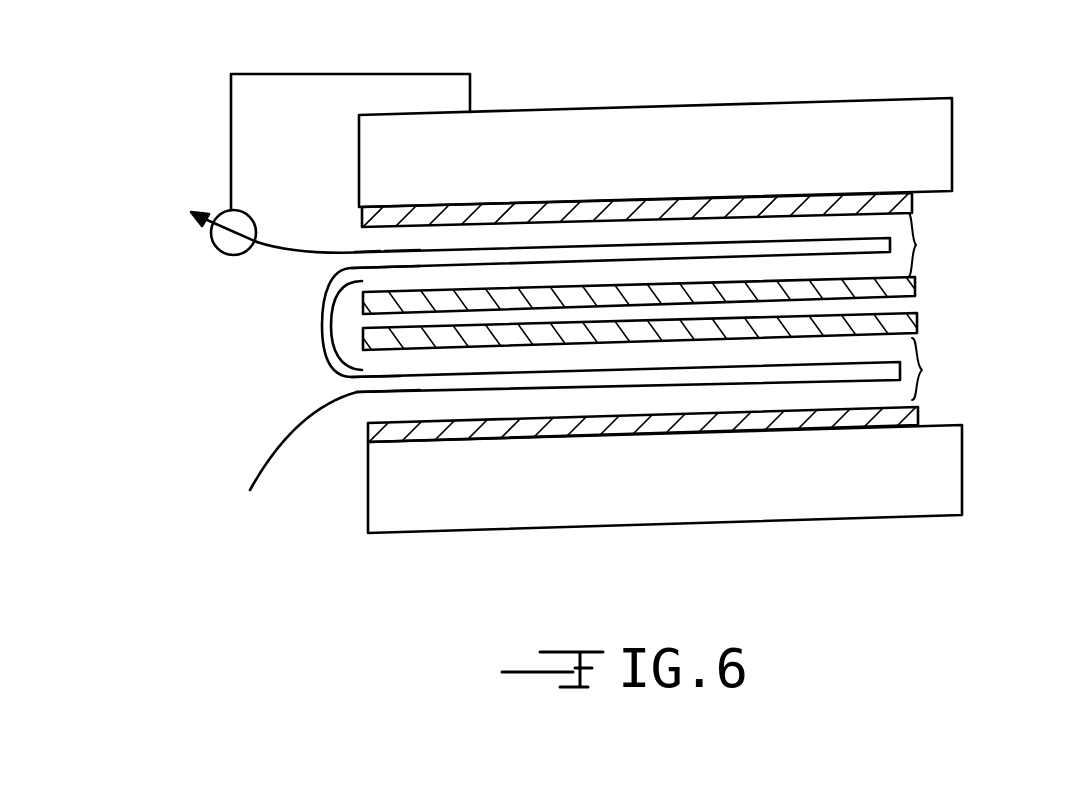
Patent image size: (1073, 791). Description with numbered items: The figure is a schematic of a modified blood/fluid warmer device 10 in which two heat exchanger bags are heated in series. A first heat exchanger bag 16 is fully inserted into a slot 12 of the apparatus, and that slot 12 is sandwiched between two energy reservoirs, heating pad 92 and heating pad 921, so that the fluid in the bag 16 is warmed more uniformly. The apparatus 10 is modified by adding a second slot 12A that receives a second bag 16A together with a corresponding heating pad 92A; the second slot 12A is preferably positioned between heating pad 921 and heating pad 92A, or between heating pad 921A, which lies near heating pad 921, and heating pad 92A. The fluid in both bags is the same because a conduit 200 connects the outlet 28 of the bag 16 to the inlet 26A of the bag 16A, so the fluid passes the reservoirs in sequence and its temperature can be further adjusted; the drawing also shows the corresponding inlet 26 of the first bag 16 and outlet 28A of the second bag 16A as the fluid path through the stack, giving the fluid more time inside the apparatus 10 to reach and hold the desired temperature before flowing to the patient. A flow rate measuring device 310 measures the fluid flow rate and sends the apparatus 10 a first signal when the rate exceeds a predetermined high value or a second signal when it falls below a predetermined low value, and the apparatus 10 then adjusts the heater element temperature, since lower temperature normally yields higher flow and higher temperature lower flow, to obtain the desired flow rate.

The warmer device 10 is at (658, 98).
The flow rate measuring device 310 is at (221, 212).
The upper membrane layer 28A is at (363, 253).
The second bag 16A is at (392, 250).
The inlet of bag 16a 26A is at (333, 274).
The heating pad 92A is at (913, 203).
The second slot 12A is at (916, 229).
The heating pad 921A is at (916, 287).
The heating pad 921 is at (916, 325).
The conduit 200 is at (322, 330).
The outlet of bag 16 28 is at (350, 376).
The lower membrane layer 26 is at (350, 392).
The heat exchanger bag 16 is at (378, 393).
The slot 12 is at (922, 358).
The heating pad 92 is at (914, 418).